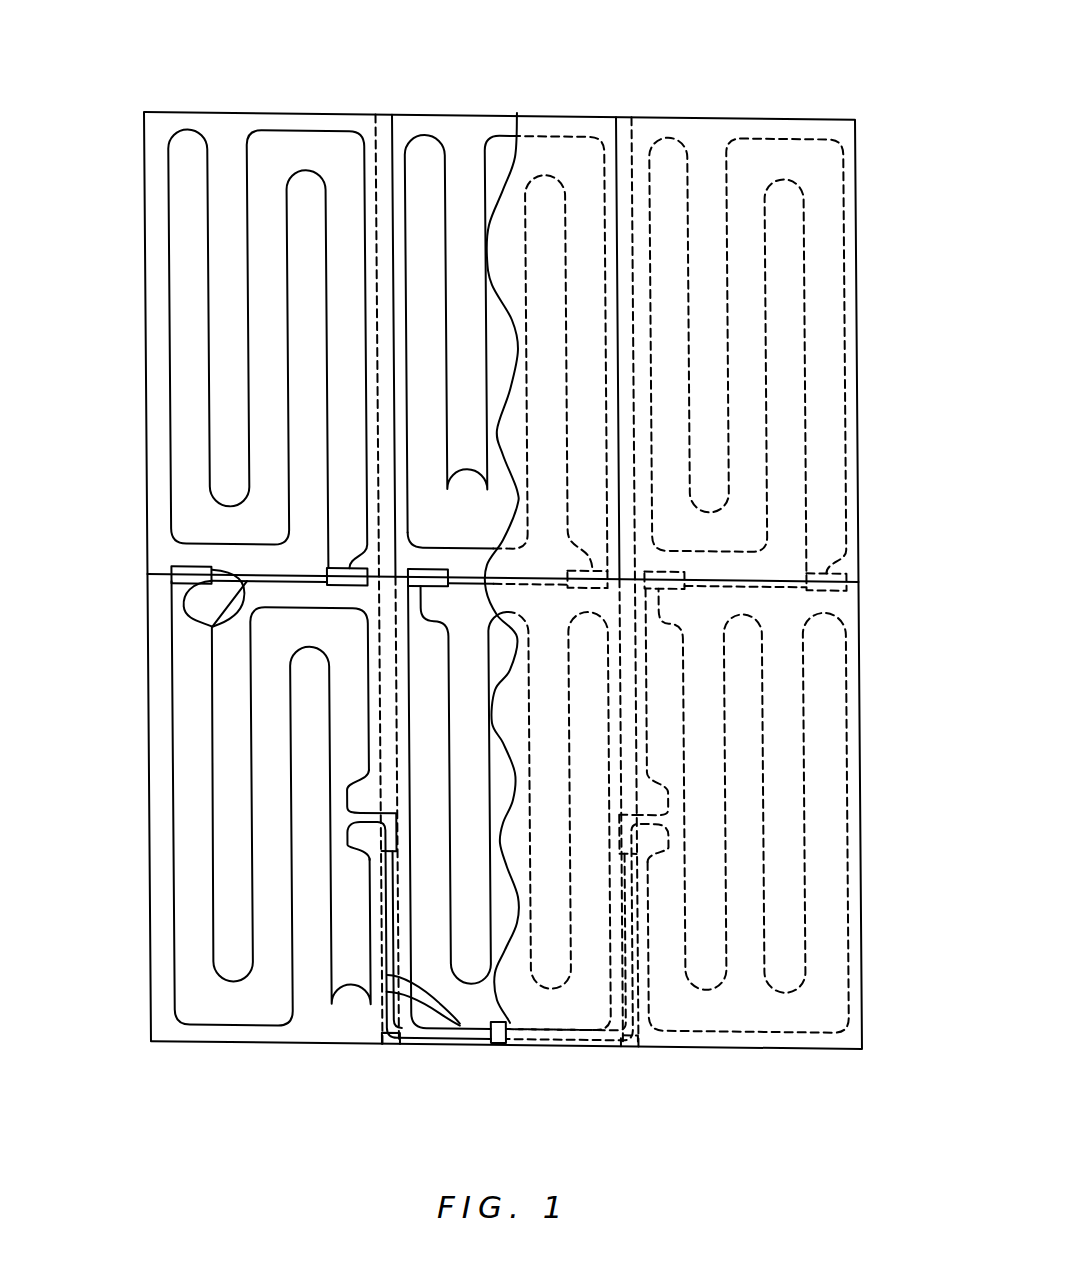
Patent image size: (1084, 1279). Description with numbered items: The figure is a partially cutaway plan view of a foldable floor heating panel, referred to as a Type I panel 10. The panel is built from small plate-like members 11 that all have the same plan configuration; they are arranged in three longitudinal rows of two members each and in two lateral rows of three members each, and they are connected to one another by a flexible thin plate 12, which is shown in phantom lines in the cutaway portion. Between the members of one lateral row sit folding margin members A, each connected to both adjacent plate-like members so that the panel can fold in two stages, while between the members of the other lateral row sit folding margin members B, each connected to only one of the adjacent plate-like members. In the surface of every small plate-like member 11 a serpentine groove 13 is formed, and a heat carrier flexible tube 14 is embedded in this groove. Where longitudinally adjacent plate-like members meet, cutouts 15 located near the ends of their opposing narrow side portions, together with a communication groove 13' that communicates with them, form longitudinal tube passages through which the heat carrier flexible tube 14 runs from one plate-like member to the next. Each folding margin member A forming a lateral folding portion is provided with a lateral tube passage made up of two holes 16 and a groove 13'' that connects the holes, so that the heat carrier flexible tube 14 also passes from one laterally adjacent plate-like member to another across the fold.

The Type I panel 10 is at (489, 90).
The small plate-like member 11 is at (149, 554).
The flexible thin plate 12 is at (785, 714).
The groove 13 is at (267, 296).
The communication groove 13' is at (229, 797).
The groove connecting two holes 13'' is at (460, 1045).
The heat carrier flexible tube 14 is at (168, 186).
The cutout 15 is at (174, 566).
The hole 16 is at (368, 1034).
The folding margin member A is at (381, 1048).
The folding margin member B is at (384, 122).